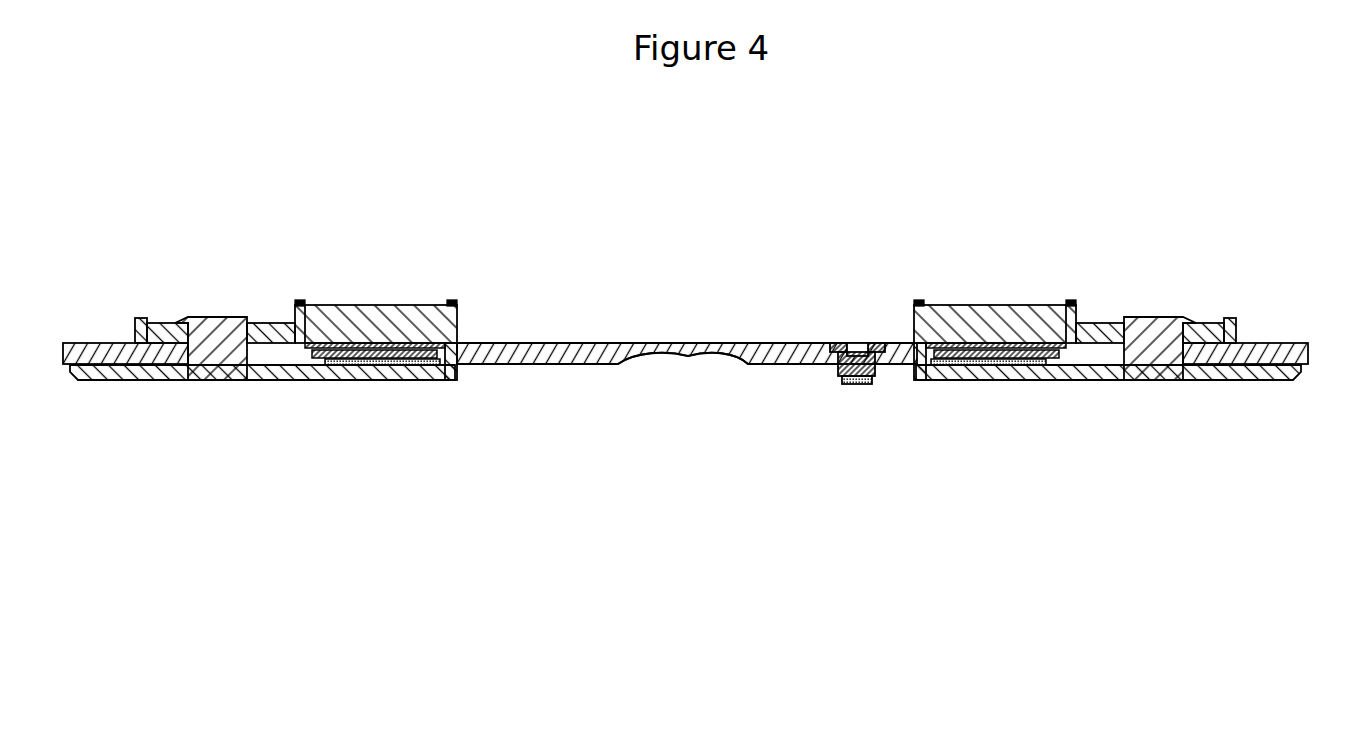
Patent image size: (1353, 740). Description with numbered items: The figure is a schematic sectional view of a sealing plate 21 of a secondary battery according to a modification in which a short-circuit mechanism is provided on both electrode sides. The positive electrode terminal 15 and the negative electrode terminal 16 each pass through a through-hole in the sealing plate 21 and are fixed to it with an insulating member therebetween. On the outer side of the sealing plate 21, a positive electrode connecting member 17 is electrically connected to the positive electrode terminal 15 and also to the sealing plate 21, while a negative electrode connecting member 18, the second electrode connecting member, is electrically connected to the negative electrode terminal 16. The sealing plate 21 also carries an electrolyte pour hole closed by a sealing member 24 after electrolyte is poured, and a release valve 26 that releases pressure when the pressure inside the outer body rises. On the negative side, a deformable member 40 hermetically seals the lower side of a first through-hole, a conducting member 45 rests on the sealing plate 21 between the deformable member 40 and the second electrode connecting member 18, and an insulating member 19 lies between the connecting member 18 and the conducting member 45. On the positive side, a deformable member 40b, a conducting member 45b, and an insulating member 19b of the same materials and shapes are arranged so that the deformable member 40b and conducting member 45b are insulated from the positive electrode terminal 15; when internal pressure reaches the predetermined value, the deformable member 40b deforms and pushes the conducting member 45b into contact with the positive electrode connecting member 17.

The positive electrode terminal 15 is at (1152, 317).
The negative electrode terminal 16 is at (213, 317).
The positive electrode connecting member 17 is at (970, 307).
The negative electrode connecting member 18 is at (383, 307).
The insulating member 19 is at (322, 343).
The insulating member 19b is at (1052, 343).
The sealing plate 21 is at (520, 343).
The sealing member 24 is at (838, 343).
The release valve 26 is at (718, 355).
The deformable member 40 is at (330, 365).
The deformable member 40b is at (951, 365).
The conducting member 45 is at (418, 358).
The conducting member 45b is at (1035, 358).